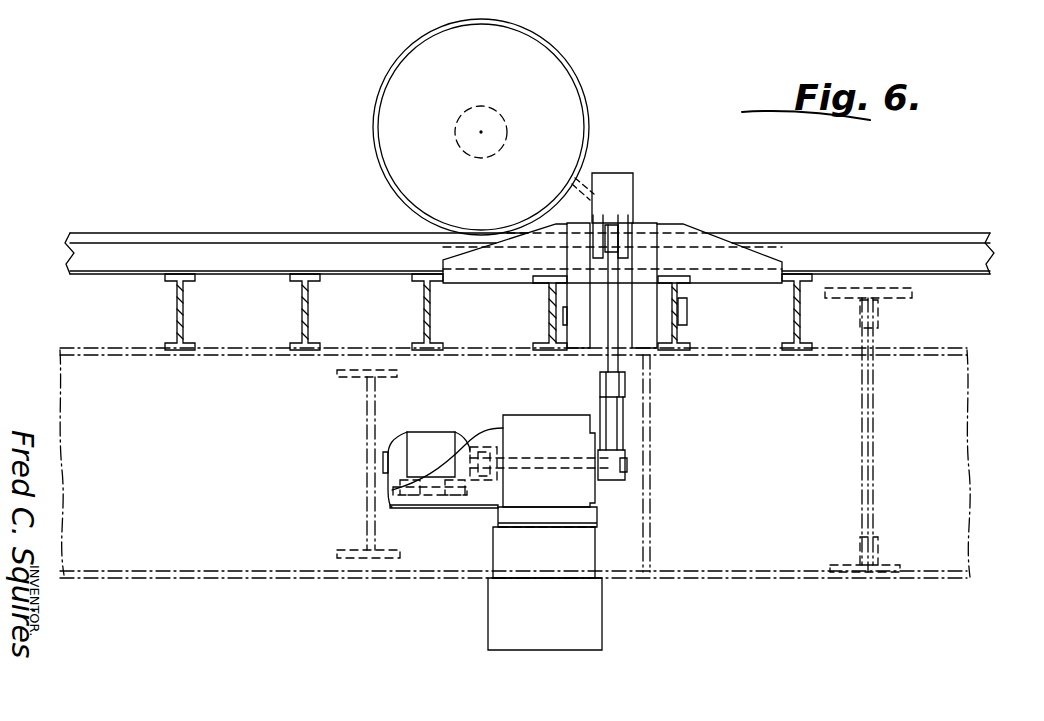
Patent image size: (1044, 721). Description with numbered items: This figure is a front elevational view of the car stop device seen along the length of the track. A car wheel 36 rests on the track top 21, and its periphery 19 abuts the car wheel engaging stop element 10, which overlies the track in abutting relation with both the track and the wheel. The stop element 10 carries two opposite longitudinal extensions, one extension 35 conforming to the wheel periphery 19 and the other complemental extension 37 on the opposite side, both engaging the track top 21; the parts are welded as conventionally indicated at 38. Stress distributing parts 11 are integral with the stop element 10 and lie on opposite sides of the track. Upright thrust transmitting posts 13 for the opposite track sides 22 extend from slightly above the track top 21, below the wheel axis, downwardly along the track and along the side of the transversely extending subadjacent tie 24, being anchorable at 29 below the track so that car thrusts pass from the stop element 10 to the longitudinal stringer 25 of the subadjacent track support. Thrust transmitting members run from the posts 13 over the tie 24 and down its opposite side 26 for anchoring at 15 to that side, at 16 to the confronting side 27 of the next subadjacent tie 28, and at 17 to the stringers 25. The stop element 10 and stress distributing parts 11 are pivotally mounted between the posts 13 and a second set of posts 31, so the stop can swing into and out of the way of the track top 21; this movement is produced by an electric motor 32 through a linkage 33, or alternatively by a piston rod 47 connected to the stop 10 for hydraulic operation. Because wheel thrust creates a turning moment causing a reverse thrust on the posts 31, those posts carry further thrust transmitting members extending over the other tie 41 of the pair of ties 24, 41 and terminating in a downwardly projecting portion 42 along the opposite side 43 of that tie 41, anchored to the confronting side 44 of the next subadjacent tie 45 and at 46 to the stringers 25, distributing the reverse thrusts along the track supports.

The car wheel engaging stop element 10 is at (607, 173).
The stress distributing parts 11 is at (640, 278).
The upright thrust transmitting posts 13 is at (642, 308).
The anchoring point to tie side 15 is at (682, 297).
The anchoring point to next tie 16 is at (789, 310).
The anchoring point to stringers 17 is at (742, 347).
The car wheel periphery 19 is at (586, 180).
The track top 21 is at (925, 236).
The track sides 22 is at (890, 252).
The subadjacent tie 24 is at (678, 348).
The longitudinal stringer 25 is at (76, 400).
The opposite side of tie 26 is at (688, 347).
The confronting side of next tie 27 is at (781, 348).
The next subadjacent tie 28 is at (806, 350).
The post anchorage 29 is at (580, 350).
The posts 31 is at (576, 314).
The electric motor 32 is at (433, 432).
The linkage 33 is at (623, 411).
The longitudinal extension 35 is at (586, 182).
The car wheel 36 is at (406, 98).
The complemental extension 37 is at (638, 182).
The welds 38 is at (596, 198).
The other tie 41 is at (552, 350).
The downwardly projecting portion 42 is at (542, 308).
The opposite side of other tie 43 is at (548, 332).
The confronting side of next tie 44 is at (440, 335).
The next subadjacent tie 45 is at (432, 352).
The anchoring point to stringers 46 is at (492, 348).
The piston rod 47 is at (618, 277).